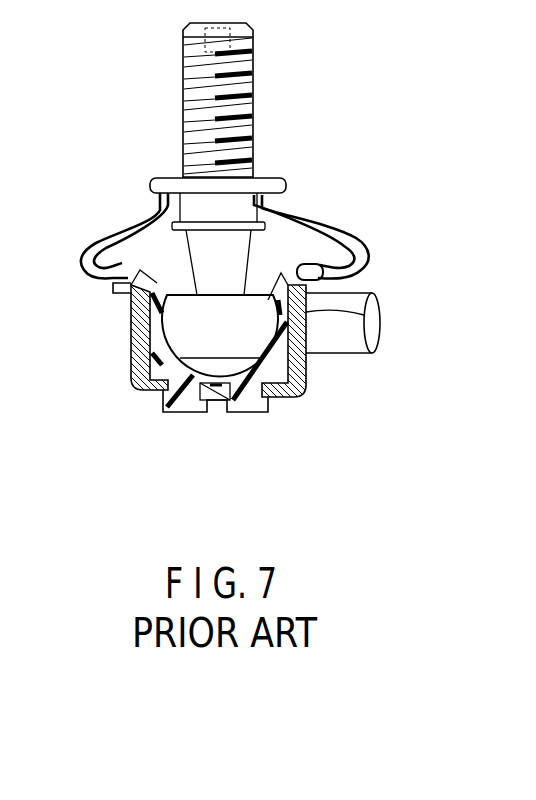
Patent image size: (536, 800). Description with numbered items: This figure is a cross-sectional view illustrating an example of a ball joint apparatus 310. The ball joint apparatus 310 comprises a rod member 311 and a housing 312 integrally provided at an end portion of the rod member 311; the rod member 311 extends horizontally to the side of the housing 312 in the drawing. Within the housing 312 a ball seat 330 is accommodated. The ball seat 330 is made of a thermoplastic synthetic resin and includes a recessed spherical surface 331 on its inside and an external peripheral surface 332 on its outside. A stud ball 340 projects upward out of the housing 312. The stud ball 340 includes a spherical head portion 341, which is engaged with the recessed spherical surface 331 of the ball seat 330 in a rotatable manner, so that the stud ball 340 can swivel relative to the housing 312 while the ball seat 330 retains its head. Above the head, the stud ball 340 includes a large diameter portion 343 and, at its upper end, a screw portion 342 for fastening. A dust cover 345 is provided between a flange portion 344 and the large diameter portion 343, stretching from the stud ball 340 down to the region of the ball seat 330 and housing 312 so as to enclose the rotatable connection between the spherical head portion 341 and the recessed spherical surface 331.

The ball joint apparatus 310 is at (135, 392).
The rod member 311 is at (348, 346).
The housing 312 is at (372, 318).
The ball seat 330 is at (252, 403).
The recessed spherical surface 331 is at (176, 340).
The external peripheral surface 332 is at (140, 307).
The stud ball 340 is at (256, 108).
The spherical head portion 341 is at (198, 345).
The screw portion 342 is at (232, 66).
The large diameter portion 343 is at (170, 178).
The flange portion 344 is at (303, 268).
The dust cover 345 is at (146, 230).